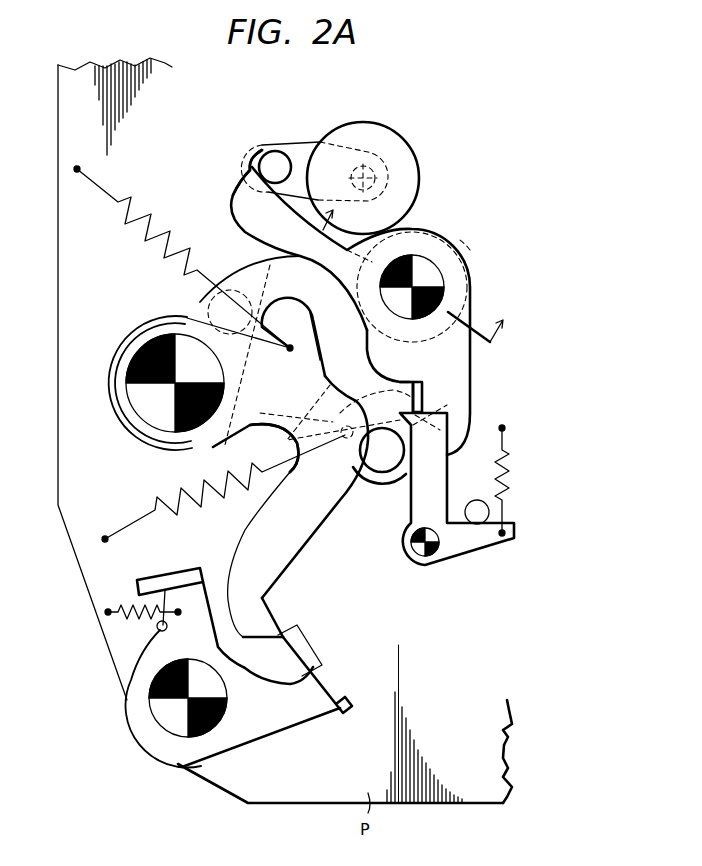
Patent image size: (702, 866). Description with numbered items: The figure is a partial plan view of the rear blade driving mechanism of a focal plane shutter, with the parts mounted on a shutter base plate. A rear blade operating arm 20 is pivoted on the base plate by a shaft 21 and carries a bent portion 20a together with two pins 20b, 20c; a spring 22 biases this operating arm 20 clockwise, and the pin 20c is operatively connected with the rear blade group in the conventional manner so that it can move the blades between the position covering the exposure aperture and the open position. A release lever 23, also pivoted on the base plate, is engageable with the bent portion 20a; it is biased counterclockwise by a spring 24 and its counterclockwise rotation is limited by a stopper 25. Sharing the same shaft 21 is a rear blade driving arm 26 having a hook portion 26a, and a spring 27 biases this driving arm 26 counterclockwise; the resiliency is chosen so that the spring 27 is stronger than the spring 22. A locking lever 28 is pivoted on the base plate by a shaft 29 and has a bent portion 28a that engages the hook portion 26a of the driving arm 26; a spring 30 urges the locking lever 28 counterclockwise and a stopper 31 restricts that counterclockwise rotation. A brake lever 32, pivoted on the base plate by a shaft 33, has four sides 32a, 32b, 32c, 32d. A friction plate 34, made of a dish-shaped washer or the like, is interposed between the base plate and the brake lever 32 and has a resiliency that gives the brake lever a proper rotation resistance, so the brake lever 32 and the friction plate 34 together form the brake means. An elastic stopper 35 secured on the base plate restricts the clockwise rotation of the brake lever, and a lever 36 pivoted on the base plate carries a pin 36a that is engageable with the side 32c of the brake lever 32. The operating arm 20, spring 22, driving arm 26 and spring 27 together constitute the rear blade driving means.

The rear blade operating arm 20 is at (185, 302).
The bent portion 20a is at (470, 386).
The pin 20b is at (242, 272).
The pin 20c is at (386, 480).
The shaft 21 is at (140, 410).
The spring 22 is at (140, 521).
The release lever 23 is at (460, 552).
The spring 24 is at (511, 474).
The stopper 25 is at (477, 500).
The rear blade driving arm 26 is at (316, 541).
The hook portion 26a is at (275, 604).
The spring 27 is at (145, 250).
The locking lever 28 is at (130, 690).
The bent portion 28a is at (312, 650).
The shaft 29 is at (170, 735).
The spring 30 is at (120, 605).
The stopper 31 is at (157, 628).
The brake lever 32 is at (474, 289).
The side 32a is at (283, 457).
The side 32b is at (408, 386).
The side 32c is at (258, 158).
The side 32d is at (470, 408).
The shaft 33 is at (428, 270).
The friction plate 34 is at (465, 258).
The elastic stopper 35 is at (405, 150).
The lever 36 is at (305, 142).
The pin 36a is at (272, 152).